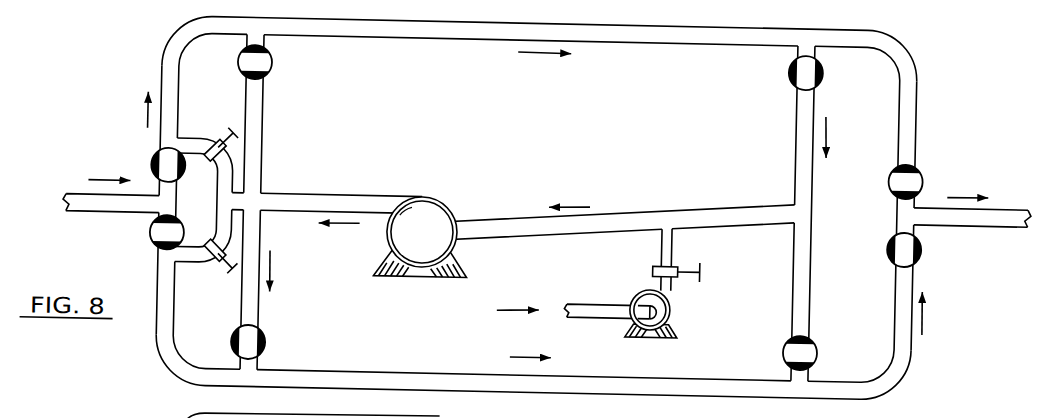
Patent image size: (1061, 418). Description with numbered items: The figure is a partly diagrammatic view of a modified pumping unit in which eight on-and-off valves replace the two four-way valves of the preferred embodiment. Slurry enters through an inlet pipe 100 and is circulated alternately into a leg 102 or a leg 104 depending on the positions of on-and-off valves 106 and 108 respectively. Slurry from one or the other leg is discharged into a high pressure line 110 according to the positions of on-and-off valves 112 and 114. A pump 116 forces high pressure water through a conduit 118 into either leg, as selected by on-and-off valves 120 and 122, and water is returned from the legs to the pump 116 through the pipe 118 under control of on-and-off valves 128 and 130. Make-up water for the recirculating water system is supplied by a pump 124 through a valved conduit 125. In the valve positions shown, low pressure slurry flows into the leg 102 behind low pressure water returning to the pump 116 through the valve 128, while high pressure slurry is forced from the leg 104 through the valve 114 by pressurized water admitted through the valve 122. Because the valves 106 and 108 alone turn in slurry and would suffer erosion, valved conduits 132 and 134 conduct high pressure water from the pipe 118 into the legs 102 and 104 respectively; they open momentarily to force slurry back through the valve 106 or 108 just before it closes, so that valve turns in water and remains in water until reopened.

The inlet pipe 100 is at (127, 221).
The leg 102 is at (695, 41).
The leg 104 is at (404, 375).
The on-and-off valve 106 is at (152, 169).
The on-and-off valve 108 is at (152, 244).
The high pressure line 110 is at (948, 218).
The on-and-off valve 112 is at (917, 161).
The on-and-off valve 114 is at (918, 254).
The pump 116 is at (440, 207).
The conduit 118 is at (306, 187).
The on-and-off valve 120 is at (269, 69).
The on-and-off valve 122 is at (280, 347).
The pump 124 is at (672, 326).
The valved conduit 125 is at (662, 235).
The on-and-off valve 128 is at (820, 70).
The on-and-off valve 130 is at (820, 344).
The valved conduit 132 is at (197, 135).
The valved conduit 134 is at (198, 270).